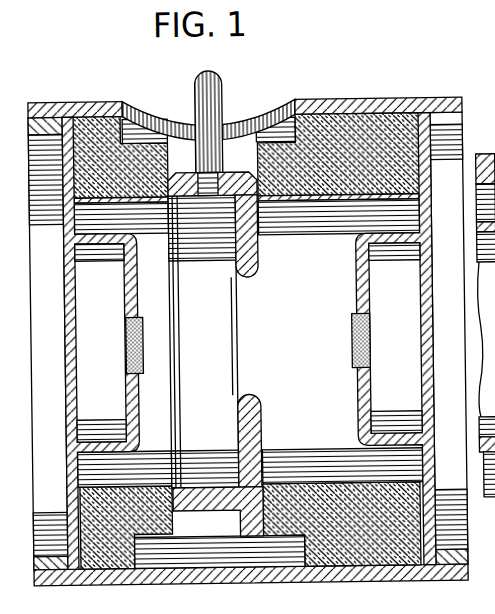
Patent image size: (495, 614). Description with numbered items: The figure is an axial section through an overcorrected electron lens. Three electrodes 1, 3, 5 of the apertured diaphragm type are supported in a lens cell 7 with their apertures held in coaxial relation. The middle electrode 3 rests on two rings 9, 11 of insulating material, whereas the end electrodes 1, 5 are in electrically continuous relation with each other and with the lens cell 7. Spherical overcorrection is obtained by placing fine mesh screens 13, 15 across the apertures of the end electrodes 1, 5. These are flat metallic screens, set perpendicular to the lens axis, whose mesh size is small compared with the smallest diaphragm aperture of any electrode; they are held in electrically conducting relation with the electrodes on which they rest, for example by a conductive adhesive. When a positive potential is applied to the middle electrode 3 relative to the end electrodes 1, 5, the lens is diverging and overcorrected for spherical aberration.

The electrode 1 is at (133, 285).
The electrode 3 is at (259, 261).
The electrode 5 is at (361, 269).
The lens cell 7 is at (338, 101).
The ring of insulating material 9 is at (91, 141).
The ring of insulating material 11 is at (390, 135).
The fine mesh screen 13 is at (143, 342).
The fine mesh screen 15 is at (352, 325).